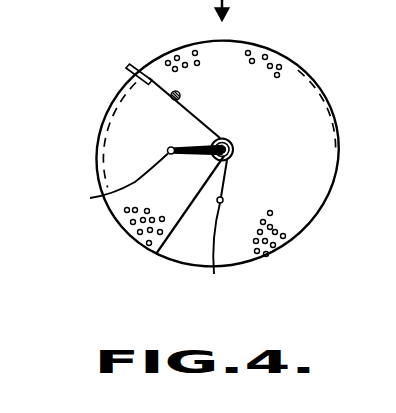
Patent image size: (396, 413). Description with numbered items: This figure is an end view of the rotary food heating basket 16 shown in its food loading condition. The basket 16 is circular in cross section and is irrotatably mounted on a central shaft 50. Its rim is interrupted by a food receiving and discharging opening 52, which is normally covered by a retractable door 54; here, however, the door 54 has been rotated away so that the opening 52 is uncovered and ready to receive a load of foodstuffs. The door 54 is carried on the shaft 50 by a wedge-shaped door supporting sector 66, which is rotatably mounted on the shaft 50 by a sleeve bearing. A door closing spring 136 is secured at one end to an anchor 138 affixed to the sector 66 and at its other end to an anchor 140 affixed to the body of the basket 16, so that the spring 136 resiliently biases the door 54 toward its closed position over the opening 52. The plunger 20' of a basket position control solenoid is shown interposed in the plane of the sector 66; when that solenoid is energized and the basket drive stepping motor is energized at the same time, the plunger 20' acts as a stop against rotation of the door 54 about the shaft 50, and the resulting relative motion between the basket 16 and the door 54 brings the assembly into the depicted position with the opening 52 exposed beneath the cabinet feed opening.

The food heating basket 16 is at (320, 201).
The plunger 20' is at (202, 87).
The shaft 50 is at (230, 137).
The food receiving and discharging opening 52 is at (301, 70).
The retractable door 54 is at (97, 136).
The wedge-shaped sector 66 is at (151, 76).
The door closing spring 136 is at (230, 170).
The anchor 138 is at (101, 198).
The anchor 140 is at (200, 256).